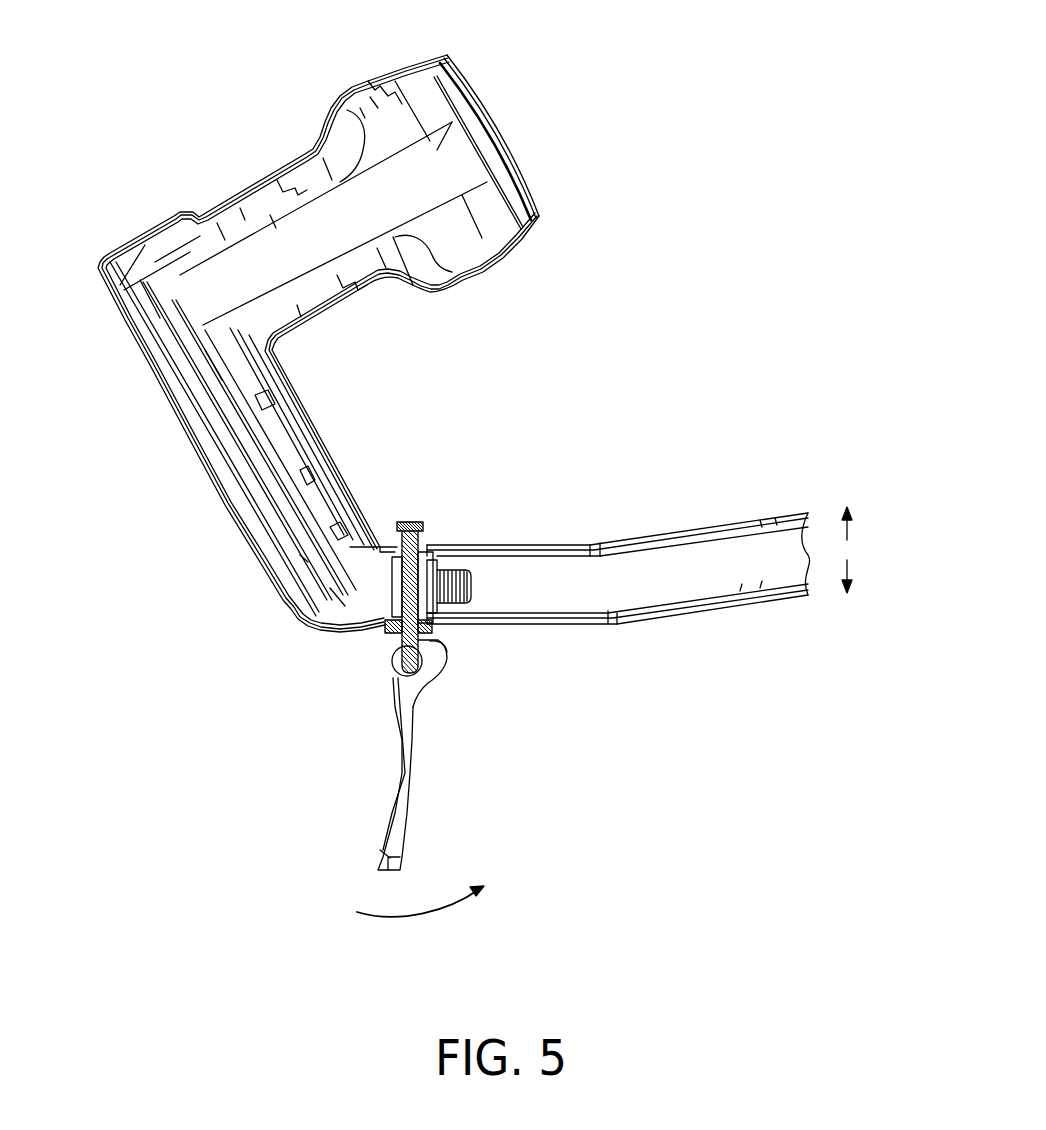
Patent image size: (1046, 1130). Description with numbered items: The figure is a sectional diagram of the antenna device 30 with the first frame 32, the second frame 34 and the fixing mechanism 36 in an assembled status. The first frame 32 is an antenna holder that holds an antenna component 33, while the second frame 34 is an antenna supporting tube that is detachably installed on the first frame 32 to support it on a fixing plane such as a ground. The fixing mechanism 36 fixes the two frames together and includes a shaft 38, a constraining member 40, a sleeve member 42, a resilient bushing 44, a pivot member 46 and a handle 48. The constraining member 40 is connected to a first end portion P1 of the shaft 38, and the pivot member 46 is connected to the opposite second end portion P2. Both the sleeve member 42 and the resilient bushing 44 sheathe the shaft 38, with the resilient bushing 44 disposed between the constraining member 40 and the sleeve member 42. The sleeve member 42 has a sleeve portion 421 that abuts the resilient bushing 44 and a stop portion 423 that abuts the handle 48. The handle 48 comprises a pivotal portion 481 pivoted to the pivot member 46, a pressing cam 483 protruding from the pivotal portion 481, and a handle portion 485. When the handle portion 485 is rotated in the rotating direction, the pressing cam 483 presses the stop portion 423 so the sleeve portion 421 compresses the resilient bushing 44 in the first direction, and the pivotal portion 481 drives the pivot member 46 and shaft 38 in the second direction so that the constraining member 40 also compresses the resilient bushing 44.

The antenna device 30 is at (722, 114).
The first frame 32 is at (208, 462).
The antenna component 33 is at (341, 100).
The second frame 34 is at (760, 525).
The fixing mechanism 36 is at (427, 750).
The shaft 38 is at (433, 567).
The constraining member 40 is at (410, 526).
The sleeve member 42 is at (279, 590).
The sleeve portion 421 is at (395, 578).
The stop portion 423 is at (385, 630).
The resilient bushing 44 is at (398, 524).
The pivot member 46 is at (440, 653).
The handle 48 is at (491, 755).
The pivotal portion 481 is at (418, 682).
The pressing cam 483 is at (437, 672).
The handle portion 485 is at (410, 753).
The first end portion P1 is at (414, 534).
The second end portion P2 is at (410, 657).